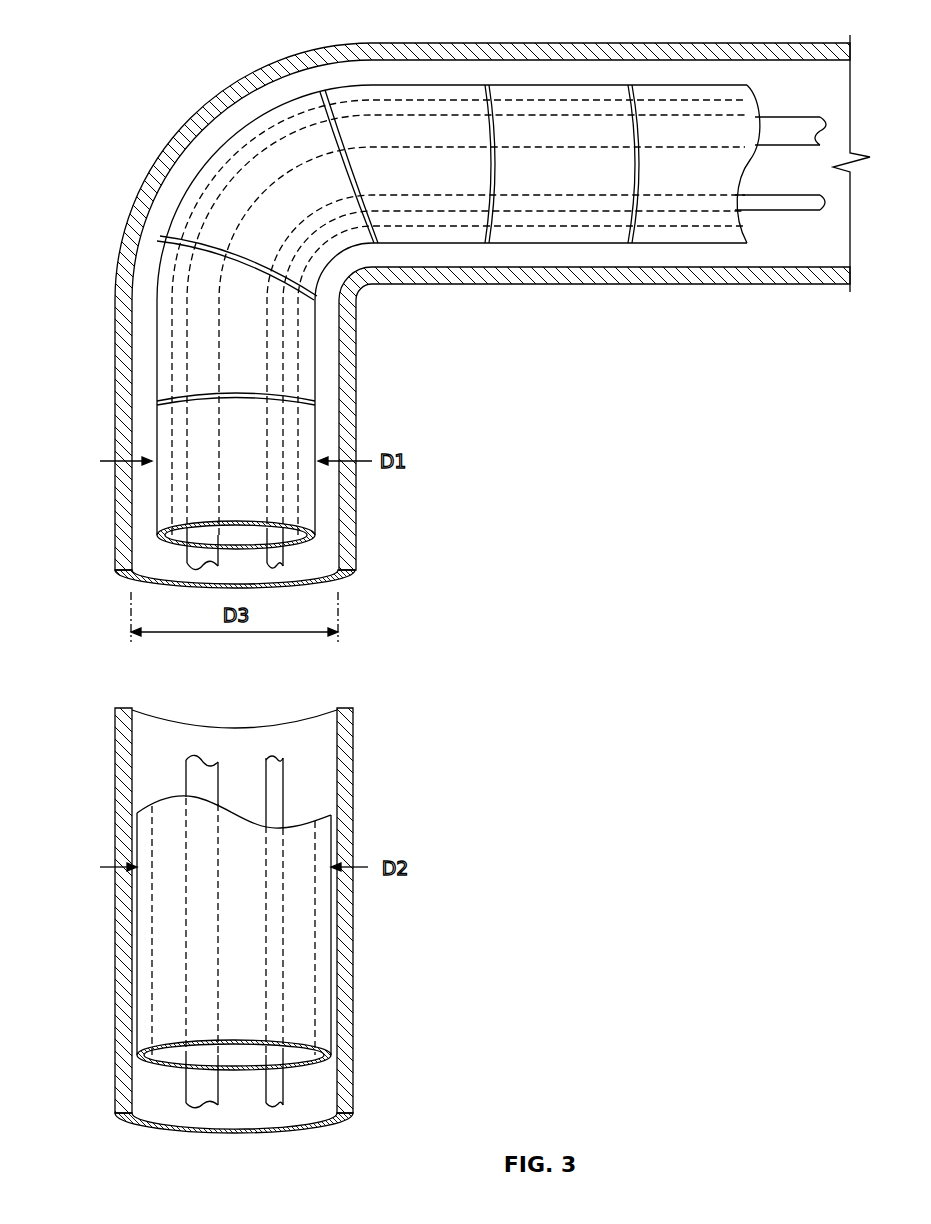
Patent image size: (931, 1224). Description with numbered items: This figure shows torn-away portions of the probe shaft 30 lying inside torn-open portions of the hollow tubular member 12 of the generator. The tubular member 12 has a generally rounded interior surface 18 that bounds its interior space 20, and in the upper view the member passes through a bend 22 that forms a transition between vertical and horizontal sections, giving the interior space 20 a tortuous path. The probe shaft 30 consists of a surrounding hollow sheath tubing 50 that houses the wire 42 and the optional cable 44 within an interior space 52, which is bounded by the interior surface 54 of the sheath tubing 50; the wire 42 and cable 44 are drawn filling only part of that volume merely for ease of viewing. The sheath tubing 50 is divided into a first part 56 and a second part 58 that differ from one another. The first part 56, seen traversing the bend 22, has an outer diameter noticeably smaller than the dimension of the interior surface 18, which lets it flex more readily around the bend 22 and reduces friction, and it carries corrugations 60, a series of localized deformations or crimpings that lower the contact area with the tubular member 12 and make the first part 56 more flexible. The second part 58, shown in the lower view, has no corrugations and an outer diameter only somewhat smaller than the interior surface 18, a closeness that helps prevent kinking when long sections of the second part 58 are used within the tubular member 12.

The tubular member 12 is at (466, 584).
The interior surface 18 is at (345, 779).
The interior space 20 is at (302, 780).
The bend 22 is at (206, 127).
The probe shaft 30 is at (143, 487).
The wire 42 is at (780, 127).
The cable 44 is at (767, 205).
The sheath tubing 50 is at (316, 436).
The interior space 52 is at (243, 1062).
The interior surface 54 is at (292, 1058).
The first part 56 is at (348, 283).
The second part 58 is at (330, 1009).
The corrugations 60 is at (320, 92).